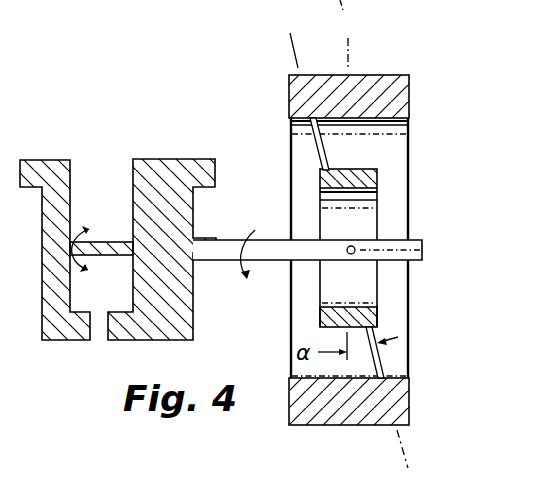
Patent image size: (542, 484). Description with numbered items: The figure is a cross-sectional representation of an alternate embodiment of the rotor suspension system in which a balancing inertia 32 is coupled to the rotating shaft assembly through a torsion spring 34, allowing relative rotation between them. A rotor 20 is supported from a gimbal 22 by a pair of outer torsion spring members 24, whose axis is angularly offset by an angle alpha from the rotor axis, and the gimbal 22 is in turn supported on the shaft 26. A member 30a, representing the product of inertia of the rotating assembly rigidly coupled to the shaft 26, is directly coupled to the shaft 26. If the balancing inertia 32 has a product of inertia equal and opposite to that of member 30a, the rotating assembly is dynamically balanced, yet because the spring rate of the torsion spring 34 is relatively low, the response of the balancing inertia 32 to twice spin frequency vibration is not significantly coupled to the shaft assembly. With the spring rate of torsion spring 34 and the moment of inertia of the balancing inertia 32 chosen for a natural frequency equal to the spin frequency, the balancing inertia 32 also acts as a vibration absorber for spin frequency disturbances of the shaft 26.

The rotor 20 is at (383, 74).
The gimbal 22 is at (381, 179).
The torsion spring members 24 is at (313, 136).
The shaft 26 is at (238, 236).
The member 30a is at (180, 158).
The balancing inertia 32 is at (69, 172).
The torsion spring 34 is at (100, 236).